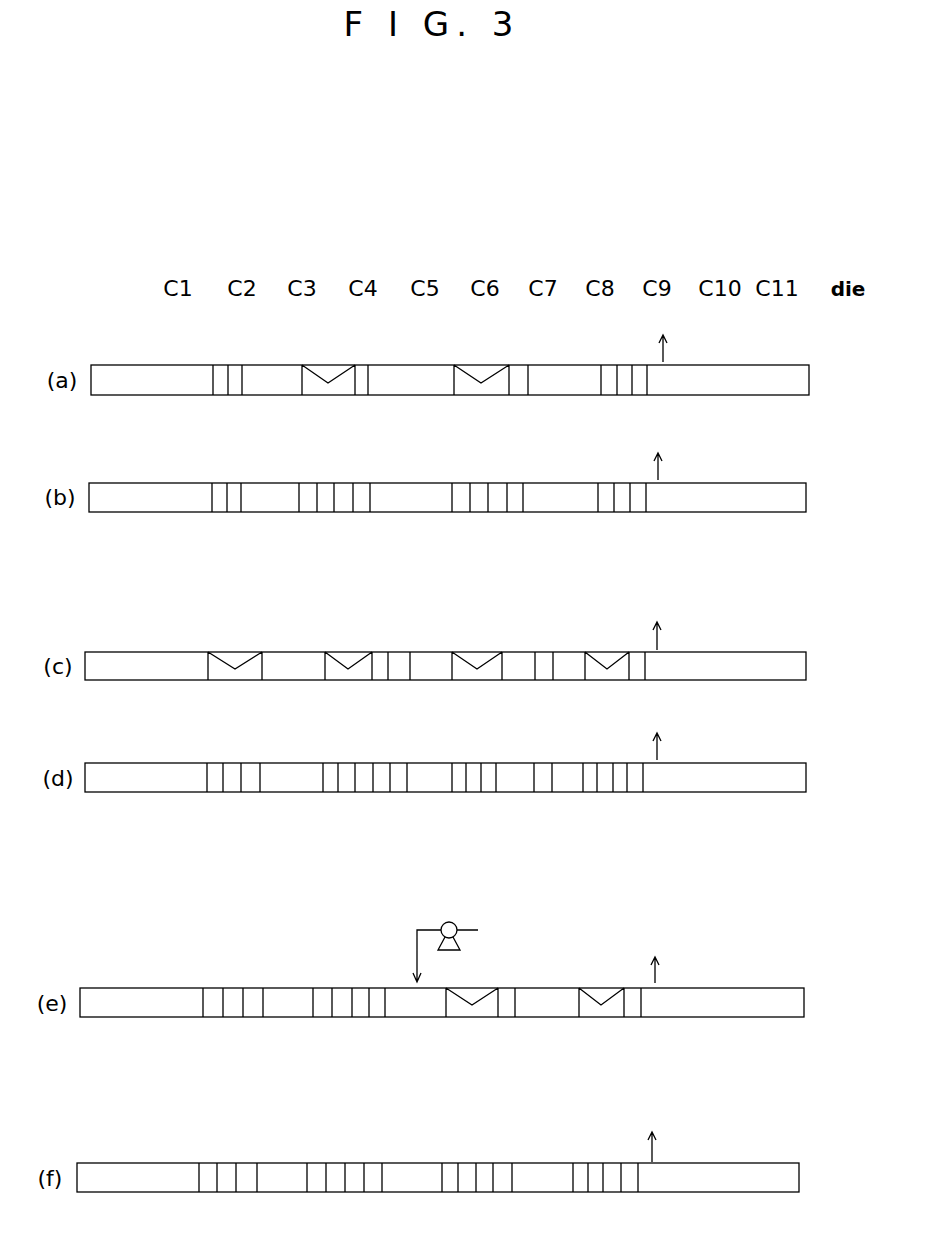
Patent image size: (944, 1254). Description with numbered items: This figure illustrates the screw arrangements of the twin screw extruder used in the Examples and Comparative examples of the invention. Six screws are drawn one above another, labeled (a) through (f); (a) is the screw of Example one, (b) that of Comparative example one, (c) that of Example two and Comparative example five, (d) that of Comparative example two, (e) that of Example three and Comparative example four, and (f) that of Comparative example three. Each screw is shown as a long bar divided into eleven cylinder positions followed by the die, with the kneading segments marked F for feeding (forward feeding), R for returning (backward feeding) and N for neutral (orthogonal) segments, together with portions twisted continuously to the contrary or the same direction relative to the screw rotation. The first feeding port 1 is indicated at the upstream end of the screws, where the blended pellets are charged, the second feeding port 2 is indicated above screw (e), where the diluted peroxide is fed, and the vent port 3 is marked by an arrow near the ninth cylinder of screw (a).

The first feeding port 1 is at (124, 261).
The second feeding port 2 is at (455, 922).
The vent port 3 is at (664, 337).